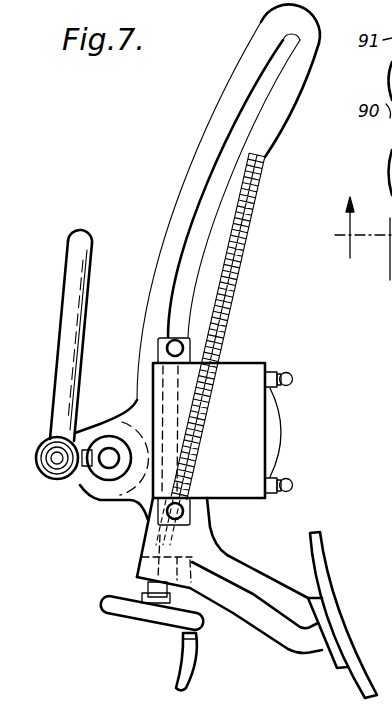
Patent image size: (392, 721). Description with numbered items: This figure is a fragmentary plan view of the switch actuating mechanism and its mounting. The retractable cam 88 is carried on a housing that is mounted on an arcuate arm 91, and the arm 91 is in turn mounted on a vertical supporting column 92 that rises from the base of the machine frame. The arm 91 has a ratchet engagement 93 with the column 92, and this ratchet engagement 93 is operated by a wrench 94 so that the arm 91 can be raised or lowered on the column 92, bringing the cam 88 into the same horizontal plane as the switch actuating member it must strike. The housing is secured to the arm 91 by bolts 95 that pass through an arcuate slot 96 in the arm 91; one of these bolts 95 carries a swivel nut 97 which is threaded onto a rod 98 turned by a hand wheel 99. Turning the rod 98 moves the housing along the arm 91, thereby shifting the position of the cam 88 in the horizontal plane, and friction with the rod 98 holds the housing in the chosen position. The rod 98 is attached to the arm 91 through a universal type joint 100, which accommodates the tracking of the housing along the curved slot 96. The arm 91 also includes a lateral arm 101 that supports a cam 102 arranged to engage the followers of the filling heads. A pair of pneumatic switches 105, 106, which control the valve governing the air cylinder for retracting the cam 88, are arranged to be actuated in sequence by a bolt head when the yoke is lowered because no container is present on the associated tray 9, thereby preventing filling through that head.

The tray 9 is at (357, 227).
The retractable cam 88 is at (278, 423).
The arcuate arm 91 is at (187, 192).
The vertical supporting column 92 is at (95, 494).
The ratchet engagement 93 is at (108, 435).
The wrench 94 is at (78, 250).
The bolts 95 is at (160, 340).
The arcuate slot 96 is at (234, 116).
The swivel nut 97 is at (207, 533).
The rod 98 is at (235, 278).
The hand wheel 99 is at (127, 612).
The universal type joint 100 is at (143, 556).
The lateral arm 101 is at (263, 627).
The cam 102 is at (321, 553).
The pneumatic switch 105 is at (291, 487).
The pneumatic switch 106 is at (283, 370).